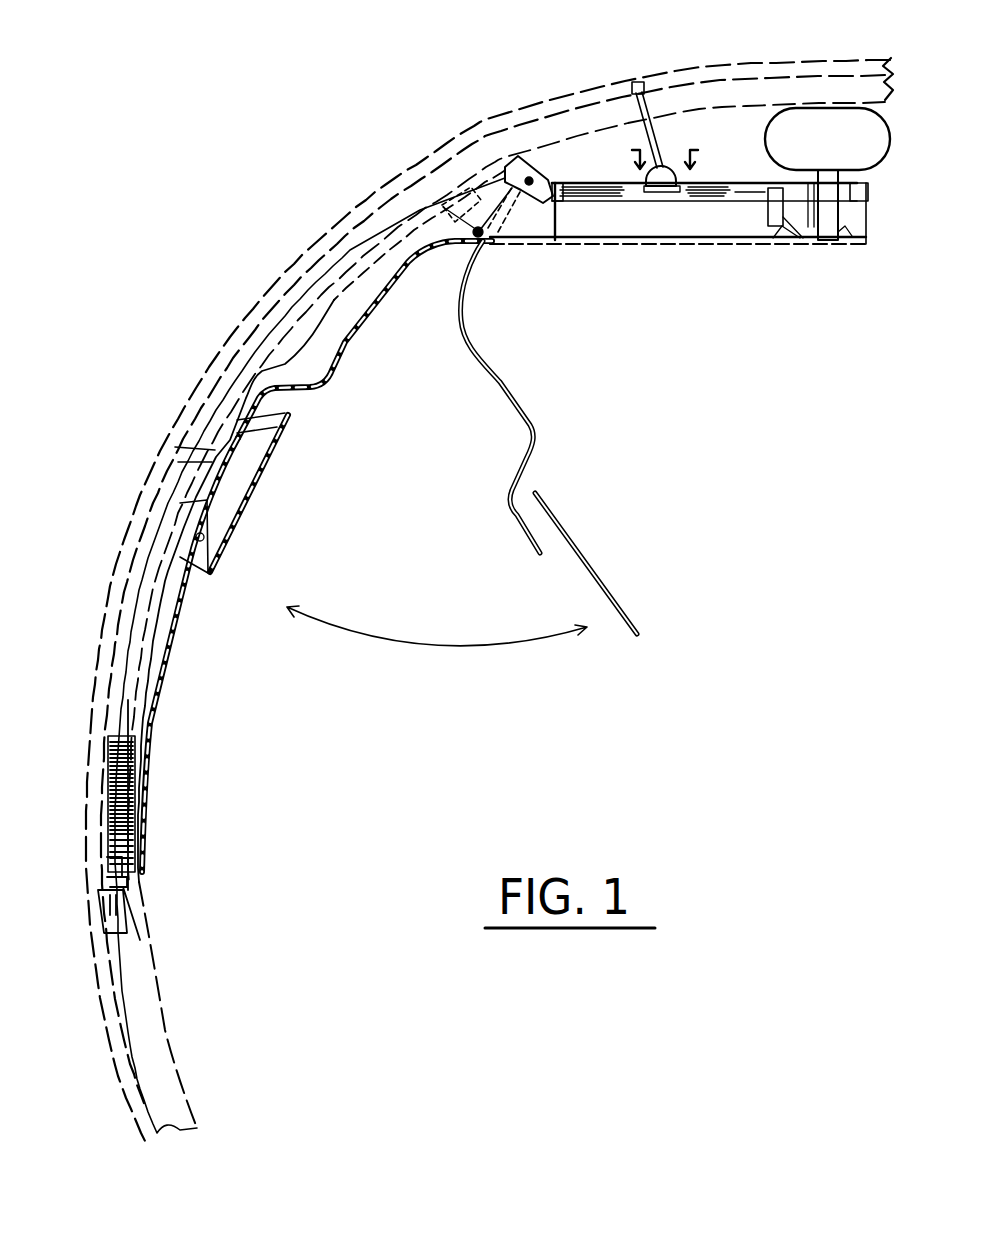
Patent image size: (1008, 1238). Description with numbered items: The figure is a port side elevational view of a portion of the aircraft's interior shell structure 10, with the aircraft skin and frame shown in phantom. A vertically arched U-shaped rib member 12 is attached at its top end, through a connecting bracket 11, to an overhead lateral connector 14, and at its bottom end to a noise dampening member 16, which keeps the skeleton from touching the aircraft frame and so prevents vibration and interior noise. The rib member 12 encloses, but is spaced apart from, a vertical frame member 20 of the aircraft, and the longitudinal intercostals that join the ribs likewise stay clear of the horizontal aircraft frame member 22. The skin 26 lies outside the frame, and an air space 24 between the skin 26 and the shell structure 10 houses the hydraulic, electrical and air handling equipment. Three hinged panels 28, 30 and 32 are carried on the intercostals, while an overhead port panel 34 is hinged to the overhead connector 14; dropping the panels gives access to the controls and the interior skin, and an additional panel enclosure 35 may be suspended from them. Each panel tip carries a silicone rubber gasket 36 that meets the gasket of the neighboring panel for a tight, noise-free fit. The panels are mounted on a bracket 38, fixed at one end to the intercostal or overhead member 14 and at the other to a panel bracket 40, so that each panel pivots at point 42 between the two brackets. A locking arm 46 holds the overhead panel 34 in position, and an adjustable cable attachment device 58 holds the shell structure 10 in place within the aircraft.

The interior shell structure 10 is at (345, 418).
The connecting bracket 11 is at (530, 172).
The arched rib member 12 is at (323, 372).
The overhead lateral connector 14 is at (700, 203).
The noise dampening member 16 is at (154, 897).
The vertical frame member 20 is at (317, 283).
The horizontal aircraft frame member 22 is at (640, 84).
The air space 24 is at (103, 663).
The skin 26 is at (282, 297).
The panel 28 is at (350, 350).
The panel 30 is at (580, 563).
The panel 32 is at (150, 723).
The overhead port panel 34 is at (663, 250).
The panel enclosure 35 is at (240, 513).
The silicone rubber gasket 36 is at (527, 243).
The bracket 38 is at (476, 226).
The panel bracket 40 is at (486, 238).
The pivot point 42 is at (474, 229).
The locking arm 46 is at (557, 221).
The cable attachment device 58 is at (643, 113).